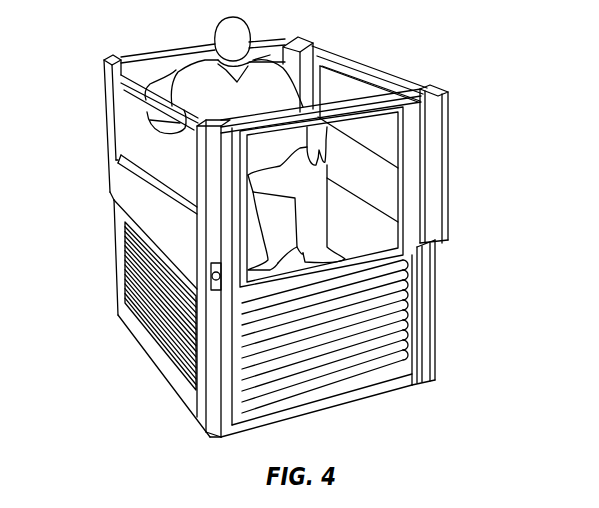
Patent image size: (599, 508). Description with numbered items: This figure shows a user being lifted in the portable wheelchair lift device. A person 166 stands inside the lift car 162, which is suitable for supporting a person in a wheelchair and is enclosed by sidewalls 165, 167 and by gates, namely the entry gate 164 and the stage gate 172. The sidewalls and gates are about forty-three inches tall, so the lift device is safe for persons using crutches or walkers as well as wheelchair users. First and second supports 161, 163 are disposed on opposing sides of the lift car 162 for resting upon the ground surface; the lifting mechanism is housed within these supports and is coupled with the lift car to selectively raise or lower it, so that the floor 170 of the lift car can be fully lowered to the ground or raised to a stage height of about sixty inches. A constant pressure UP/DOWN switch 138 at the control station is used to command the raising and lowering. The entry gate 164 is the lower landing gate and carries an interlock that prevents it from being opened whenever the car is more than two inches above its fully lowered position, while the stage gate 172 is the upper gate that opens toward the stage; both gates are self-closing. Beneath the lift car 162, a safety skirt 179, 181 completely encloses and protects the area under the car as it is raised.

The UP/DOWN switch 138 is at (207, 278).
The first support 161 is at (428, 363).
The lift car 162 is at (398, 62).
The second support 163 is at (213, 415).
The entry gate 164 is at (347, 100).
The sidewall 165 is at (333, 78).
The person 166 is at (255, 65).
The sidewall 167 is at (141, 143).
The floor 170 is at (360, 242).
The stage gate 172 is at (155, 63).
The safety skirt 179 is at (387, 313).
The safety skirt 181 is at (143, 273).